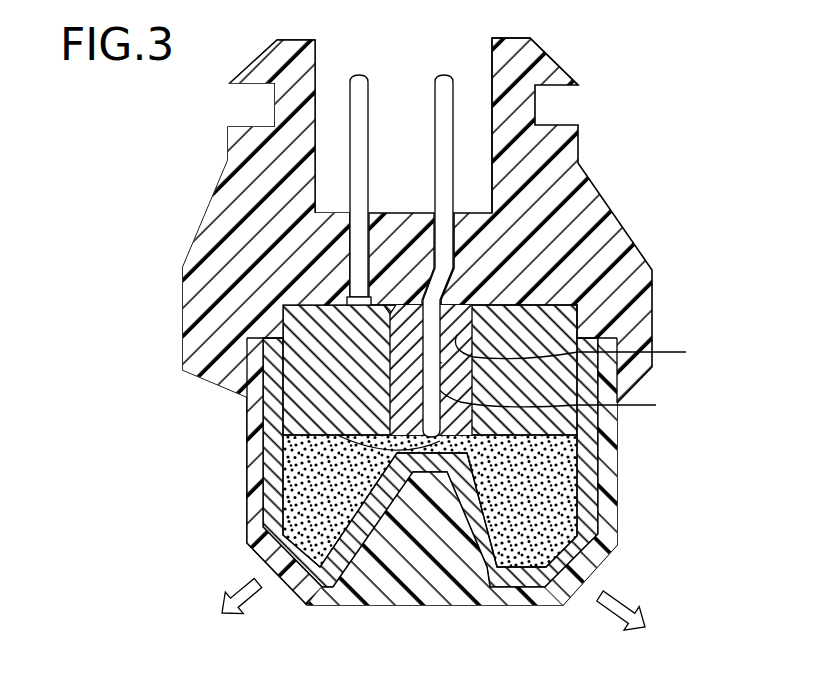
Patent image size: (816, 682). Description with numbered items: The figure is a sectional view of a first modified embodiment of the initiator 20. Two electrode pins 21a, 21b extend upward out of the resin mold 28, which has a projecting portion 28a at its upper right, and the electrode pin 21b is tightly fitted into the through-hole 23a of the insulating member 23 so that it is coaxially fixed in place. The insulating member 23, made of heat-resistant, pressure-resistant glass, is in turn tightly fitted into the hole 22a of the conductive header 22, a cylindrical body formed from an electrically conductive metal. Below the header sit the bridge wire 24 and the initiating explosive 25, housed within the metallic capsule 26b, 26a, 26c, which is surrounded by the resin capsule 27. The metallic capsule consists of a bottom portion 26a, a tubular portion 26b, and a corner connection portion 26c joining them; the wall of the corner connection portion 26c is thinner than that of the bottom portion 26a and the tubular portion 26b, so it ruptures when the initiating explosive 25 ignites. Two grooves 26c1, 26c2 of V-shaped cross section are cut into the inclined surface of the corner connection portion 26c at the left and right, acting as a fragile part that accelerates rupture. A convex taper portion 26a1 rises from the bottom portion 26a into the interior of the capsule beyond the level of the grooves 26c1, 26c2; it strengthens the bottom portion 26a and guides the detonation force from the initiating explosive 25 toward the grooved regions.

The initiator 20 is at (607, 193).
The electrode pin 21a is at (363, 92).
The electrode pin 21b is at (444, 90).
The conductive header 22 is at (575, 304).
The hole 22a is at (591, 352).
The insulating member 23 is at (392, 310).
The through-hole 23a is at (565, 391).
The bridge wire 24 is at (360, 465).
The initiating explosive 25 is at (323, 552).
The bottom portion 26a is at (522, 580).
The taper portion 26a1 is at (384, 512).
The tubular portion 26b is at (274, 458).
The corner connection portion 26c is at (562, 558).
The groove 26c1 is at (300, 555).
The groove 26c2 is at (567, 552).
The resin capsule 27 is at (244, 514).
The resin mold 28 is at (218, 205).
The projection of housing 28a is at (548, 80).